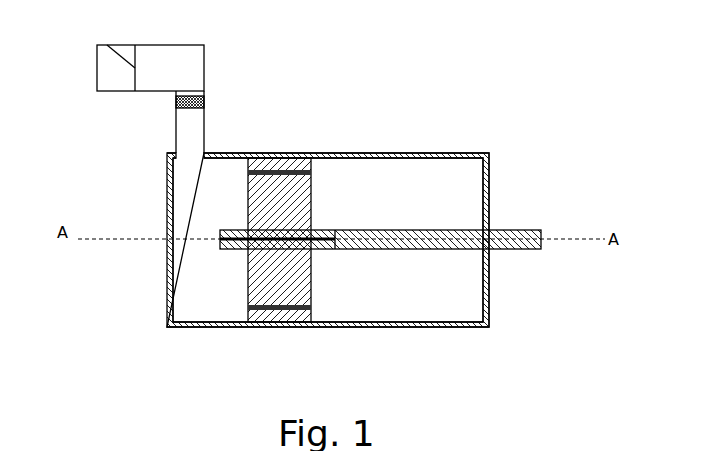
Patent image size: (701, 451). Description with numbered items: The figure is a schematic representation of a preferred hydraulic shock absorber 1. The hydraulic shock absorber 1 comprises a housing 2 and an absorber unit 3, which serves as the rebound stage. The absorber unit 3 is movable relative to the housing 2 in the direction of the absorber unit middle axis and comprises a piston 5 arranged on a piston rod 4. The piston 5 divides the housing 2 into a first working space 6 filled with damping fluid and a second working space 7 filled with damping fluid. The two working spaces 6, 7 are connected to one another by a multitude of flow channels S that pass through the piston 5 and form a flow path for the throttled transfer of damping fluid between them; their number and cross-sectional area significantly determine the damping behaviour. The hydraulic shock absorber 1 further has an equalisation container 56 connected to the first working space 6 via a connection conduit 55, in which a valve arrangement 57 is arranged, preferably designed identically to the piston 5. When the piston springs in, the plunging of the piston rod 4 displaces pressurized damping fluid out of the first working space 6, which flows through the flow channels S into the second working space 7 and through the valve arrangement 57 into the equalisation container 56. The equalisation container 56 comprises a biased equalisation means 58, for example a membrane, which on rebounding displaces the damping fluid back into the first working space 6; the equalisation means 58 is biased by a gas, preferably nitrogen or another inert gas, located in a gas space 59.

The hydraulic shock absorber 1 is at (577, 75).
The housing 2 is at (167, 311).
The absorber unit 3 is at (289, 246).
The piston rod 4 is at (507, 230).
The piston 5 is at (257, 313).
The first working space 6 is at (190, 186).
The second working space 7 is at (475, 186).
The flow channels S is at (291, 171).
The connection conduit 55 is at (185, 135).
The equalisation container 56 is at (116, 64).
The valve arrangement 57 is at (205, 103).
The equalisation means 58 is at (107, 45).
The gas space 59 is at (113, 73).